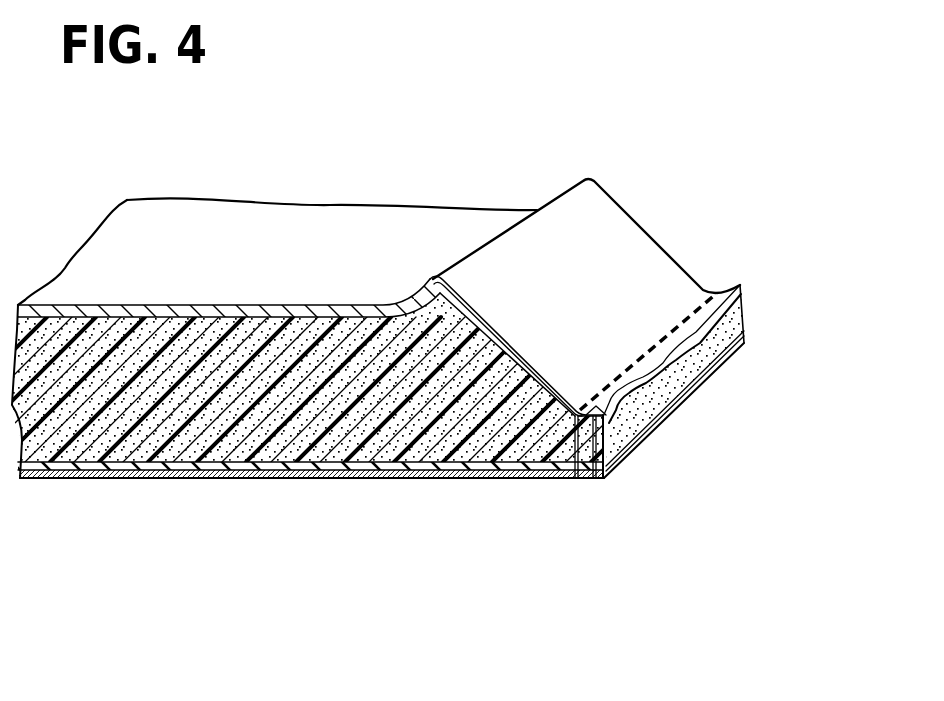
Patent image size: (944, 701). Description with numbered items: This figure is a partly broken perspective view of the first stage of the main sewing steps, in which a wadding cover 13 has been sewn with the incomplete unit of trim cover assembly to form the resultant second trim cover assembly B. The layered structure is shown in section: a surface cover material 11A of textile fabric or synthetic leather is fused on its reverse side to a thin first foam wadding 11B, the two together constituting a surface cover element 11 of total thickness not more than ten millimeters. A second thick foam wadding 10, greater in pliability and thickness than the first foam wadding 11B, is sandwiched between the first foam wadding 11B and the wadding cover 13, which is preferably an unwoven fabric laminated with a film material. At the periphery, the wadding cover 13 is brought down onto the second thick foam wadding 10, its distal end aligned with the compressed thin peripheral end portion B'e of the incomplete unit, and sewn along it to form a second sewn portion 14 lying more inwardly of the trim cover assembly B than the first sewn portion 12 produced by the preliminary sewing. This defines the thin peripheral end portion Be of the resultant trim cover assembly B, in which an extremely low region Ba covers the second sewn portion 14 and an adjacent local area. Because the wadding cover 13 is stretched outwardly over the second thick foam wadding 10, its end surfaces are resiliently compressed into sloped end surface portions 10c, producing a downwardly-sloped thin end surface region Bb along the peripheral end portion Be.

The second thick foam wadding 10 is at (42, 443).
The sloped end surface portion 10c is at (458, 325).
The surface cover element 11 is at (311, 530).
The surface cover material 11A is at (163, 464).
The first foam wadding 11B is at (142, 543).
The first sewn portion 12 is at (598, 470).
The wadding cover 13 is at (233, 305).
The second sewn portion 14 is at (578, 470).
The second trim cover assembly B is at (277, 238).
The extremely low region Ba is at (672, 318).
The downwardly-sloped thin end surface region Bb is at (608, 222).
The thin peripheral end portion Be is at (737, 263).
The compressed thin peripheral end portion B'e is at (675, 380).